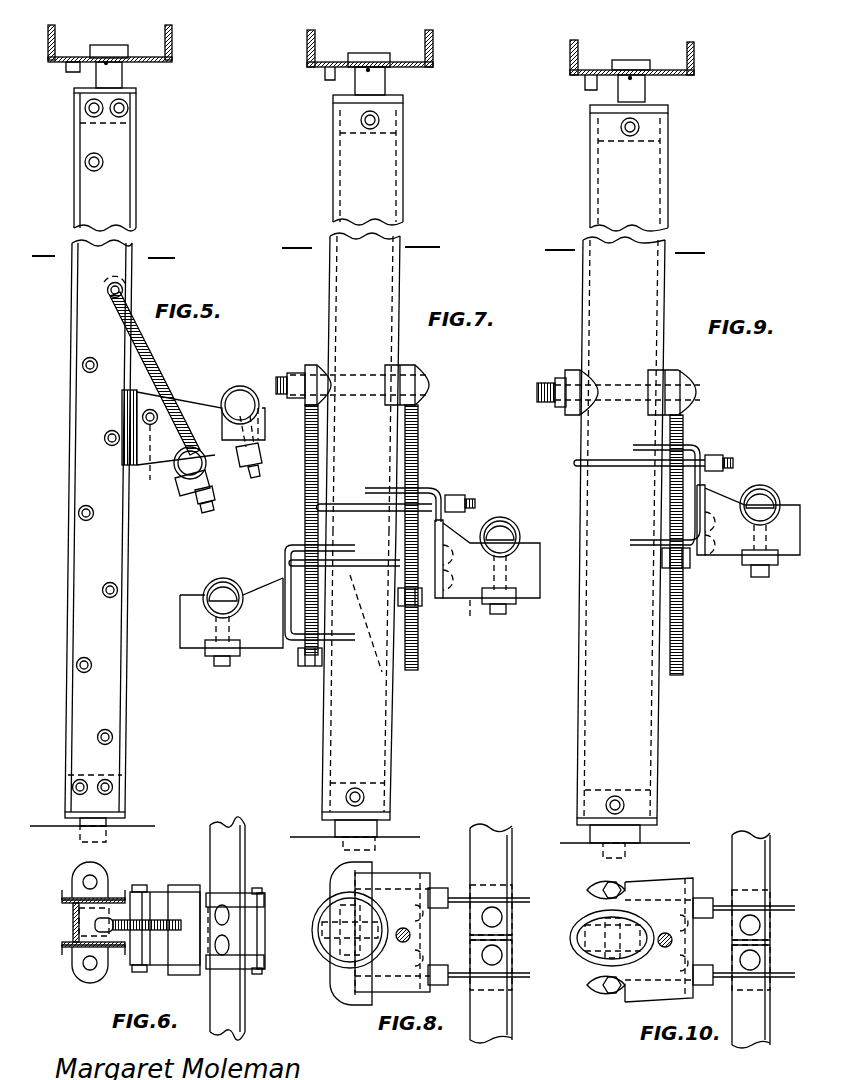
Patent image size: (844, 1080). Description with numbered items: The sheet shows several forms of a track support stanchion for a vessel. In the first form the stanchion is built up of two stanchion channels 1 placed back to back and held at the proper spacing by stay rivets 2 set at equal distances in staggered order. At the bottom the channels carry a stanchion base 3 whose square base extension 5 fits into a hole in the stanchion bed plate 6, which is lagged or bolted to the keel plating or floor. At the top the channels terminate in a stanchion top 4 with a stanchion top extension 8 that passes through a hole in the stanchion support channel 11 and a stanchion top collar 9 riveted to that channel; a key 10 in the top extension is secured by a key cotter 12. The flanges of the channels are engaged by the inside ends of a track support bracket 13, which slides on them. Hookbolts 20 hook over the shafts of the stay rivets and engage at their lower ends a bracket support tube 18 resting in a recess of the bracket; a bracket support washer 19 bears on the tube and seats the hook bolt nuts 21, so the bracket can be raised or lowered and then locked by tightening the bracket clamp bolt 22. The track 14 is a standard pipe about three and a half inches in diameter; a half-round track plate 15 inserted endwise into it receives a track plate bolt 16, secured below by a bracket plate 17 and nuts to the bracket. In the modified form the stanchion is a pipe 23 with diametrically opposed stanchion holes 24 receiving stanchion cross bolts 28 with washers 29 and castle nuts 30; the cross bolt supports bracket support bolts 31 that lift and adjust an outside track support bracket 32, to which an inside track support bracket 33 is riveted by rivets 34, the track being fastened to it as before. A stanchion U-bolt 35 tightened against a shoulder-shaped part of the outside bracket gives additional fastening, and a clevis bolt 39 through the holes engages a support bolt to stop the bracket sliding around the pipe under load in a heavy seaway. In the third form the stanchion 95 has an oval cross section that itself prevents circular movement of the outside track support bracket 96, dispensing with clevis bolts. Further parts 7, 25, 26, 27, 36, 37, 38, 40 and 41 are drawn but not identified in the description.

In FIG. 5, the stanchion channels 1 is at (115, 200).
In FIG. 6, the stanchion channels 1 is at (62, 898).
In FIG. 5, the stay rivets 2 is at (103, 160).
In FIG. 6, the stay rivets 2 is at (78, 925).
In FIG. 5, the stanchion base 3 is at (110, 800).
In FIG. 5, the stanchion top 4 is at (128, 106).
In FIG. 5, the square base extension 5 is at (96, 834).
In FIG. 5, the stanchion bed plate 6 is at (82, 825).
In FIG. 6, the stanchion bed plate 6 is at (92, 982).
In FIG. 6, the hinge tab 7 is at (100, 876).
In FIG. 5, the stanchion top extension 8 is at (112, 82).
In FIG. 7, the stanchion top extension 8 is at (368, 257).
In FIG. 5, the stanchion top collar 9 is at (100, 45).
In FIG. 5, the key 10 is at (78, 68).
In FIG. 7, the key 10 is at (328, 78).
In FIG. 9, the key 10 is at (590, 86).
In FIG. 5, the stanchion support channel 11 is at (55, 38).
In FIG. 7, the stanchion support channel 11 is at (316, 42).
In FIG. 9, the stanchion support channel 11 is at (578, 55).
In FIG. 5, the key cotter 12 is at (106, 63).
In FIG. 7, the key cotter 12 is at (368, 70).
In FIG. 9, the key cotter 12 is at (630, 78).
In FIG. 5, the track support bracket 13 is at (188, 415).
In FIG. 6, the track support bracket 13 is at (163, 890).
In FIG. 8, the track support bracket 13 is at (392, 932).
In FIG. 5, the track 14 is at (248, 390).
In FIG. 6, the track 14 is at (235, 858).
In FIG. 7, the track 14 is at (518, 530).
In FIG. 8, the track 14 is at (495, 866).
In FIG. 9, the track 14 is at (778, 492).
In FIG. 10, the track 14 is at (757, 862).
In FIG. 5, the track plate 15 is at (200, 450).
In FIG. 6, the track plate 15 is at (238, 895).
In FIG. 7, the track plate 15 is at (516, 545).
In FIG. 8, the track plate 15 is at (513, 896).
In FIG. 9, the track plate 15 is at (755, 520).
In FIG. 10, the track plate 15 is at (771, 896).
In FIG. 5, the track plate bolt 16 is at (253, 472).
In FIG. 7, the track plate bolt 16 is at (502, 614).
In FIG. 9, the track plate bolt 16 is at (763, 578).
In FIG. 5, the bracket plate 17 is at (262, 455).
In FIG. 6, the bracket plate 17 is at (262, 890).
In FIG. 7, the bracket plate 17 is at (498, 612).
In FIG. 9, the bracket plate 17 is at (758, 568).
In FIG. 5, the bracket support tube 18 is at (182, 490).
In FIG. 6, the bracket support tube 18 is at (185, 884).
In FIG. 5, the bracket support washer 19 is at (200, 503).
In FIG. 5, the hookbolts 20 is at (155, 372).
In FIG. 5, the hook bolt nuts 21 is at (205, 512).
In FIG. 5, the bracket clamp bolt 22 is at (151, 453).
In FIG. 7, the pipe stanchion 23 is at (375, 293).
In FIG. 8, the pipe stanchion 23 is at (345, 905).
In FIG. 7, the stanchion holes 24 is at (400, 325).
In FIG. 7, the cap plate 25 is at (388, 112).
In FIG. 7, the stem 26 is at (385, 88).
In FIG. 7, the slide block 27 is at (362, 53).
In FIG. 7, the stanchion cross bolts 28 is at (381, 385).
In FIG. 9, the stanchion cross bolts 28 is at (627, 392).
In FIG. 7, the washers 29 is at (330, 365).
In FIG. 9, the washers 29 is at (582, 372).
In FIG. 7, the castle nuts 30 is at (300, 372).
In FIG. 9, the castle nuts 30 is at (560, 384).
In FIG. 7, the bracket support bolts 31 is at (420, 428).
In FIG. 8, the bracket support bolts 31 is at (401, 943).
In FIG. 9, the bracket support bolts 31 is at (684, 428).
In FIG. 10, the bracket support bolts 31 is at (665, 940).
In FIG. 7, the outside track support bracket 32 is at (440, 488).
In FIG. 8, the outside track support bracket 32 is at (351, 933).
In FIG. 7, the inside track support bracket 33 is at (473, 622).
In FIG. 7, the rivets 34 is at (447, 545).
In FIG. 7, the stanchion U-bolt 35 is at (470, 500).
In FIG. 8, the stanchion U-bolt 35 is at (435, 888).
In FIG. 9, the stanchion U-bolt 35 is at (730, 462).
In FIG. 10, the stanchion U-bolt 35 is at (705, 896).
In FIG. 7, the nut 36 is at (420, 608).
In FIG. 9, the nut 36 is at (684, 568).
In FIG. 7, the base 37 is at (338, 796).
In FIG. 7, the foot block 38 is at (360, 845).
In FIG. 9, the foot block 38 is at (620, 850).
In FIG. 7, the clevis bolt 39 is at (385, 672).
In FIG. 7, the foot 40 is at (355, 824).
In FIG. 9, the foot 40 is at (640, 838).
In FIG. 5, the bolt 41 is at (72, 782).
In FIG. 7, the bolt 41 is at (364, 797).
In FIG. 9, the bolt 41 is at (623, 803).
In FIG. 9, the oval stanchion 95 is at (640, 318).
In FIG. 10, the oval stanchion 95 is at (612, 938).
In FIG. 9, the outside track support bracket 96 is at (712, 446).
In FIG. 10, the outside track support bracket 96 is at (640, 940).